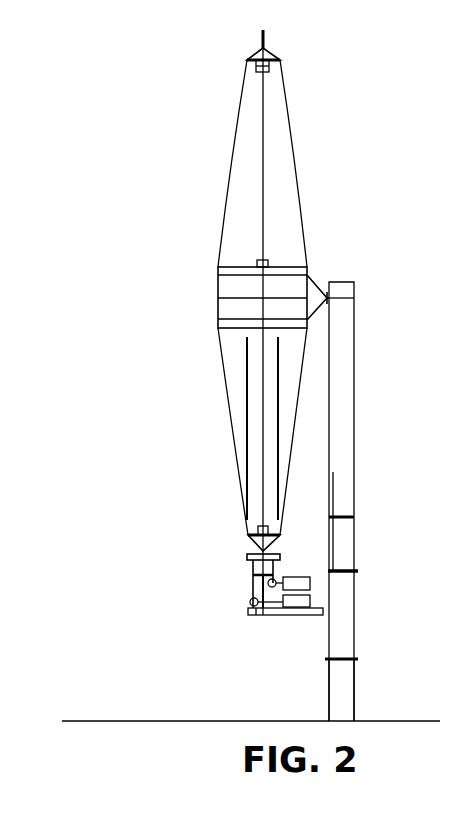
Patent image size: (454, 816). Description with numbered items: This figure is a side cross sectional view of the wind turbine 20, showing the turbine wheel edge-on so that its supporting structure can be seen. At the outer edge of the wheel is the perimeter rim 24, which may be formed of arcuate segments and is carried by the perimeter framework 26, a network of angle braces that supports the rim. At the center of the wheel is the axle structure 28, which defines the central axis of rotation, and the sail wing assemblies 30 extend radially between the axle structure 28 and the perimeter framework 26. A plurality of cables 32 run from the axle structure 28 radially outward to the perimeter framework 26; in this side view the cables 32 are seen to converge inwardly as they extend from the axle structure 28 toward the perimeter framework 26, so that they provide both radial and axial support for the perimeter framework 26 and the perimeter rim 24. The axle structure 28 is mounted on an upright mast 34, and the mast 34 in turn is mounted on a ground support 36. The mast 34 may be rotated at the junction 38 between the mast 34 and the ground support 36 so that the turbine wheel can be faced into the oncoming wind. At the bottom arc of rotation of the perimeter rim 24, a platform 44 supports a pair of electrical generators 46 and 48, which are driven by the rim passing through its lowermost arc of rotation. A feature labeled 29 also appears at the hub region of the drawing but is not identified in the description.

The wind turbine 20 is at (325, 138).
The perimeter rim 24 is at (259, 44).
The perimeter framework 26 is at (266, 54).
The axle structure 28 is at (218, 300).
The hub shaft 29 is at (232, 298).
The sail wing assemblies 30 is at (258, 389).
The cables 32 is at (231, 180).
The upright mast 34 is at (350, 423).
The ground support 36 is at (348, 700).
The junction 38 is at (357, 658).
The platform 44 is at (302, 615).
The generator 46 is at (309, 581).
The generator 48 is at (308, 598).